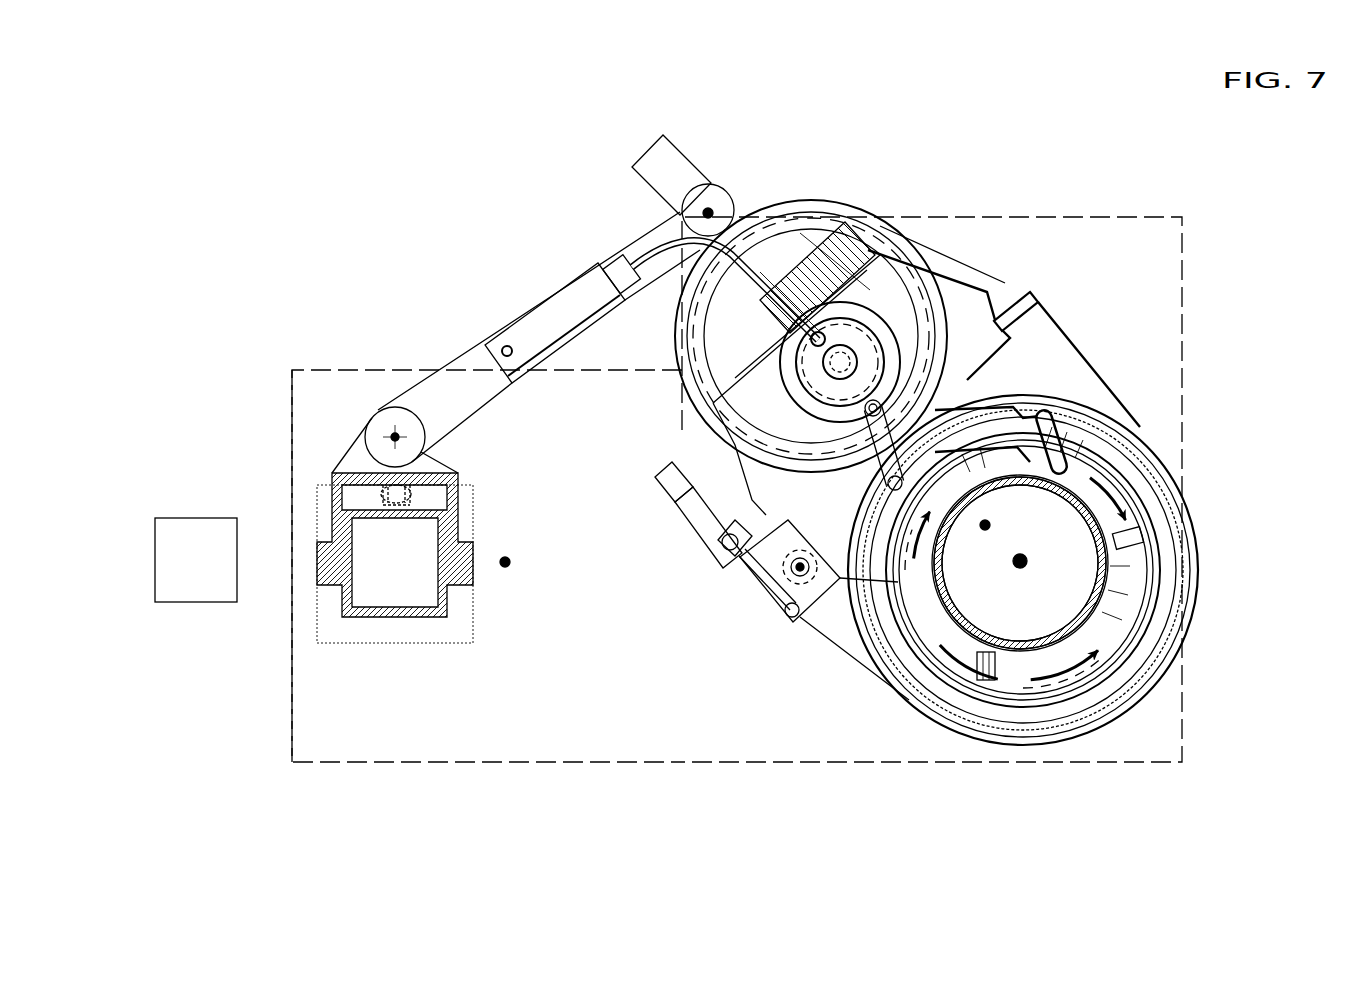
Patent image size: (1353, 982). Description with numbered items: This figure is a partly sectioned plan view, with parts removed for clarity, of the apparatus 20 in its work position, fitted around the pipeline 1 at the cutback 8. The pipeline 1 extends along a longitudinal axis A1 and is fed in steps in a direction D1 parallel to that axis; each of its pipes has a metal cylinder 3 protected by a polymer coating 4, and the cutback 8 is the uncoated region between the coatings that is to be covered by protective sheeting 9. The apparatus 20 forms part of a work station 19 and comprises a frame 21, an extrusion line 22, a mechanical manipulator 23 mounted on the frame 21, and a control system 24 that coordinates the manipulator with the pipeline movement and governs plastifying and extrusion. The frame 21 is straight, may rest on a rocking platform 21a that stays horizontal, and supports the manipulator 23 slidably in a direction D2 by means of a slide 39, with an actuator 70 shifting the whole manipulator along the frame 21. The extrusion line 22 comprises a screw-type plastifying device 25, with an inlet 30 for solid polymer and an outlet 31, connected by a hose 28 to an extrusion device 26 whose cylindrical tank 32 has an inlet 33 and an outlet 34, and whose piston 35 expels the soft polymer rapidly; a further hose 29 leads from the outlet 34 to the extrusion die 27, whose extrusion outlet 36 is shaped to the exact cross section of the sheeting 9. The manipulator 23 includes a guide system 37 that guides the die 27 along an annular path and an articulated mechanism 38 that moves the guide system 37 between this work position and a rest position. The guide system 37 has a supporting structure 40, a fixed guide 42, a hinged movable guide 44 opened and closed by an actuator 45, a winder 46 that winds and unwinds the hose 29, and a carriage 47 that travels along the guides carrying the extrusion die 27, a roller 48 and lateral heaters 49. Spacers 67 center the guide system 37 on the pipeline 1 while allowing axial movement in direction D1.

The pipeline 1 is at (1095, 642).
The metal cylinder 3 is at (972, 630).
The polymer coating 4 is at (950, 605).
The cutback 8 is at (1142, 564).
The protective sheeting 9 is at (1100, 500).
The work station 19 is at (1247, 265).
The apparatus 20 is at (468, 188).
The frame 21 is at (358, 612).
The rocking platform 21a is at (352, 402).
The extrusion line 22 is at (790, 168).
The mechanical manipulator 23 is at (553, 212).
The control system 24 is at (192, 512).
The plastifying device 25 is at (568, 293).
The extrusion device 26 is at (885, 405).
The extrusion die 27 is at (1032, 407).
The hose 28 is at (655, 250).
The hose 29 is at (822, 203).
The inlet 30 is at (516, 356).
The outlet 31 is at (617, 270).
The cylindrical tank 32 is at (848, 343).
The inlet 33 is at (850, 320).
The outlet 34 is at (768, 326).
The piston 35 is at (705, 366).
The extrusion outlet 36 is at (1040, 480).
The guide system 37 is at (1226, 538).
The articulated mechanism 38 is at (463, 330).
The slide 39 is at (335, 475).
The supporting structure 40 is at (965, 236).
The guide 42 is at (1148, 480).
The movable guide 44 is at (935, 683).
The actuator 45 is at (695, 530).
The winder 46 is at (960, 316).
The carriage 47 is at (1090, 420).
The roller 48 is at (1140, 438).
The lateral heaters 49 is at (843, 510).
The spacers 67 is at (1140, 497).
The actuator 70 is at (430, 497).
The longitudinal axis A1 is at (1026, 567).
The direction D1 is at (991, 525).
The direction D2 is at (508, 566).